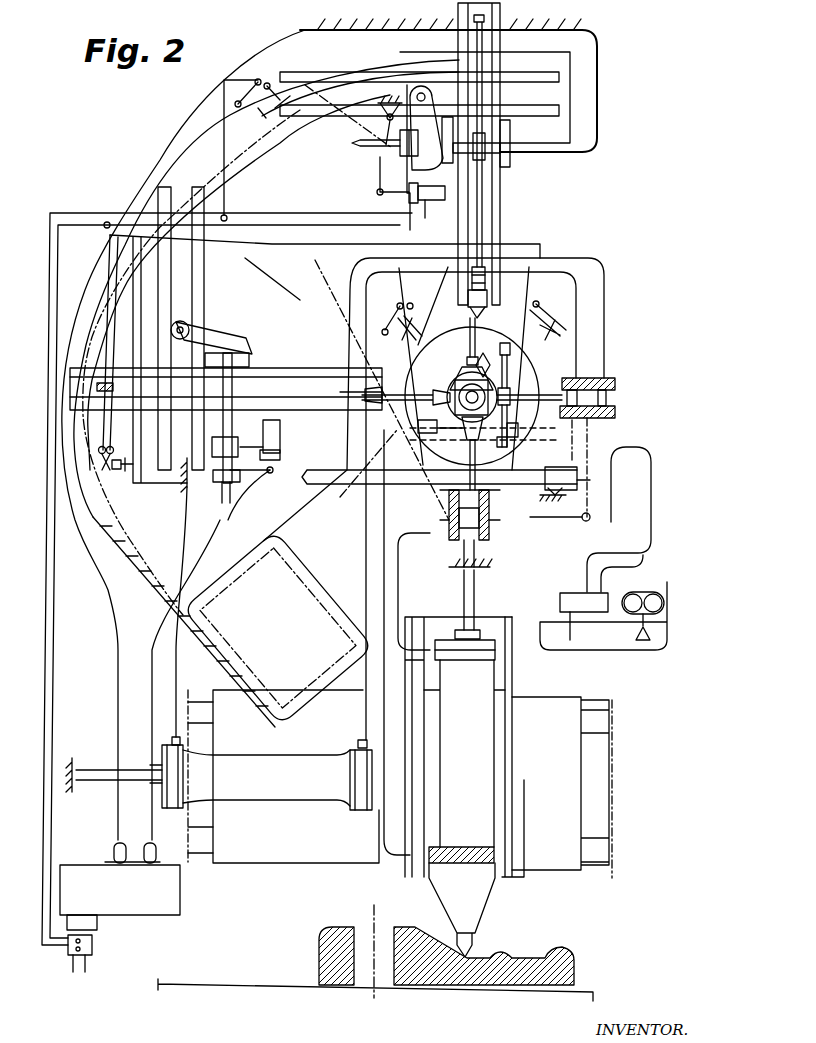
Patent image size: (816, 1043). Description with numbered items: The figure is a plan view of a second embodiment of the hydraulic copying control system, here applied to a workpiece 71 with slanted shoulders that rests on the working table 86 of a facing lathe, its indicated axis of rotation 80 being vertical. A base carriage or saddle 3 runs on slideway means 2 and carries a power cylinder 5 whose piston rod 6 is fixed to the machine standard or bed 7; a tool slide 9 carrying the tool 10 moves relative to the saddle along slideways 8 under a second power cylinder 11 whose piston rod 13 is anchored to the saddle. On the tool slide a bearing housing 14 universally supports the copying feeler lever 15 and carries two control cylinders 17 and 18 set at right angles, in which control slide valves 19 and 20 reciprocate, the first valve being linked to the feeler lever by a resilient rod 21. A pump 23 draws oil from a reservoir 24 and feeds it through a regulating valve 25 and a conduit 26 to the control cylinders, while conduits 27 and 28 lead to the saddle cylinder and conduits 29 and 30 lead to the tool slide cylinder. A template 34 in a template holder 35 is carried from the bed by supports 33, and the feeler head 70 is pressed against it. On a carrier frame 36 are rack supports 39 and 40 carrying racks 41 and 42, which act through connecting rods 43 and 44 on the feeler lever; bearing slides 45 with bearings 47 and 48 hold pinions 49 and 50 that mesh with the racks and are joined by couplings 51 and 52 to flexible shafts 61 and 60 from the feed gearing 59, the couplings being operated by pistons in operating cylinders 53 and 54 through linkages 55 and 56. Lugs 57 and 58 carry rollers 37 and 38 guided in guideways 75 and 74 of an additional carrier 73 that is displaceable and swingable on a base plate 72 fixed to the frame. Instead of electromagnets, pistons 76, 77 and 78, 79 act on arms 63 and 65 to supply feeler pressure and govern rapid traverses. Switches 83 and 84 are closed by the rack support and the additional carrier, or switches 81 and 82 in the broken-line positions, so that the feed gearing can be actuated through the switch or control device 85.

The slideway means 2 is at (597, 864).
The base carriage or saddle 3 is at (457, 572).
The power cylinder 5 is at (272, 802).
The piston rod 6 is at (111, 781).
The standard or bed 7 is at (326, 27).
The slideways 8 is at (513, 660).
The tool slide 9 is at (513, 640).
The tool 10 is at (475, 943).
The power cylinder 11 is at (494, 688).
The piston rod 13 is at (477, 592).
The bearing housing 14 is at (420, 487).
The copying feeler lever 15 is at (460, 390).
The control cylinder 17 is at (613, 378).
The control cylinder 18 is at (491, 533).
The control slide valve 19 is at (616, 400).
The control slide valve 20 is at (470, 538).
The resilient rod 21 is at (545, 392).
The pump 23 is at (652, 592).
The reservoir 24 is at (619, 652).
The regulating valve 25 is at (570, 592).
The conduit 26 is at (647, 533).
The conduit 27 is at (606, 270).
The conduit 28 is at (571, 268).
The conduit 29 is at (403, 560).
The conduit 30 is at (386, 622).
The supports 33 is at (566, 496).
The template 34 is at (574, 447).
The template holder 35 is at (591, 480).
The carrier frame 36 is at (346, 285).
The roller 37 is at (408, 90).
The roller 38 is at (186, 321).
The rack support 39 is at (488, 285).
The rack support 40 is at (328, 372).
The rack 41 is at (493, 213).
The rack 42 is at (300, 373).
The connecting rod 43 is at (468, 342).
The connecting rod 44 is at (418, 392).
The bearing slide 45 is at (512, 168).
The bearing 47 is at (512, 158).
The bearing 48 is at (252, 356).
The pinion 49 is at (480, 160).
The pinion 50 is at (250, 372).
The coupling 51 is at (420, 160).
The coupling 52 is at (280, 428).
The operating cylinder 53 is at (409, 200).
The operating cylinder 54 is at (281, 452).
The linkage 55 is at (379, 184).
The linkage 56 is at (256, 482).
The lug 57 is at (434, 96).
The lug 58 is at (216, 335).
The feed gearing 59 is at (147, 917).
The flexible shaft 60 is at (152, 818).
The flexible shaft 61 is at (116, 822).
The arm 63 is at (511, 388).
The arm 65 is at (512, 410).
The feeler head 70 is at (481, 356).
The workpiece 71 is at (407, 925).
The base plate 72 is at (134, 195).
The additional carrier 73 is at (190, 488).
The guideway 74 is at (198, 186).
The guideway 75 is at (561, 114).
The piston 76 is at (511, 350).
The piston 77 is at (489, 467).
The piston 78 is at (520, 440).
The piston 79 is at (419, 433).
The axis of rotation 80 is at (372, 943).
The switch 81 is at (234, 102).
The switch 82 is at (384, 322).
The switch 83 is at (558, 320).
The switch 84 is at (114, 482).
The switch or control device 85 is at (93, 945).
The working table 86 is at (261, 982).